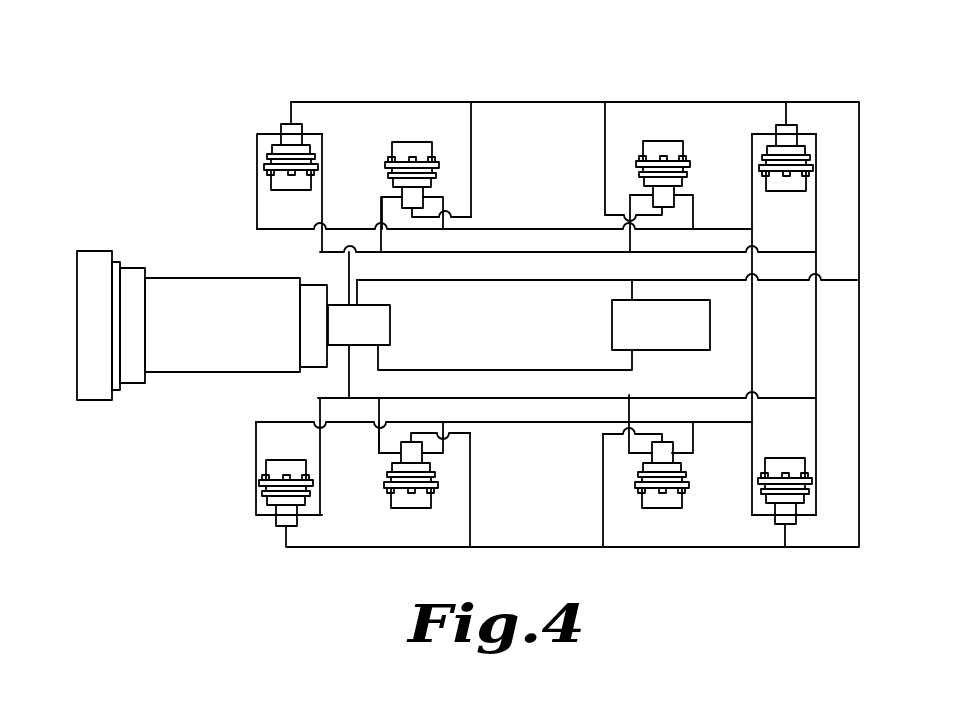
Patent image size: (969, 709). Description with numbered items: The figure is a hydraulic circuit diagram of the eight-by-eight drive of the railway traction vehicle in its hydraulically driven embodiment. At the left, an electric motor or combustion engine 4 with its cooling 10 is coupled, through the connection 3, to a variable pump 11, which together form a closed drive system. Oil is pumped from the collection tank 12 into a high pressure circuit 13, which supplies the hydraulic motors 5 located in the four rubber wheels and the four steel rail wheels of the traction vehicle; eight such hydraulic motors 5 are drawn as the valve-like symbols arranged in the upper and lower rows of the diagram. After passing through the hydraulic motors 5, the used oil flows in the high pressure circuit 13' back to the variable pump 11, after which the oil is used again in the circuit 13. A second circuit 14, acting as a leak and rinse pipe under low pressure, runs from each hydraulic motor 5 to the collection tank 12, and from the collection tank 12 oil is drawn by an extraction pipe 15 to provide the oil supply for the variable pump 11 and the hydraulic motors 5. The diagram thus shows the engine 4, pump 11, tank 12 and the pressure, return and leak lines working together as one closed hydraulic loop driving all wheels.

The coupling 3 is at (302, 360).
The electric motor or combustion engine 4 is at (190, 297).
The hydraulic motor 5 is at (405, 193).
The cooling 10 is at (92, 280).
The variable pump 11 is at (377, 323).
The collection tank 12 is at (695, 342).
The high pressure circuit 13 is at (395, 281).
The high pressure circuit (return) 13' is at (396, 369).
The second circuit 14 is at (831, 102).
The extraction pipe 15 is at (628, 360).